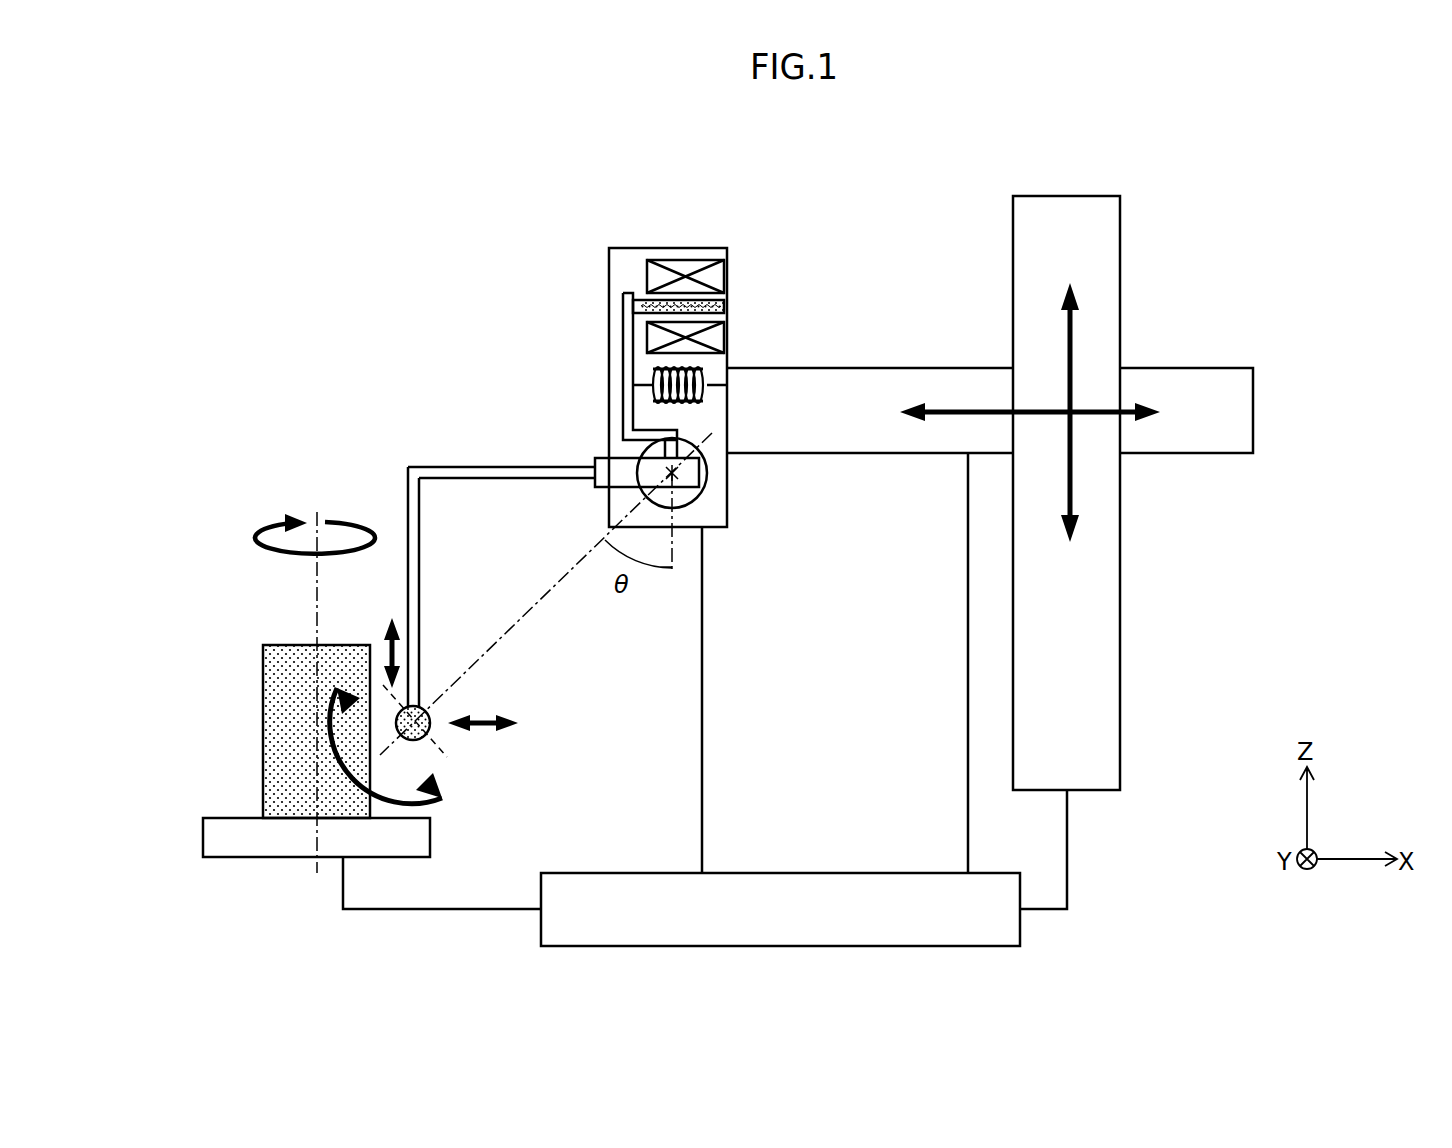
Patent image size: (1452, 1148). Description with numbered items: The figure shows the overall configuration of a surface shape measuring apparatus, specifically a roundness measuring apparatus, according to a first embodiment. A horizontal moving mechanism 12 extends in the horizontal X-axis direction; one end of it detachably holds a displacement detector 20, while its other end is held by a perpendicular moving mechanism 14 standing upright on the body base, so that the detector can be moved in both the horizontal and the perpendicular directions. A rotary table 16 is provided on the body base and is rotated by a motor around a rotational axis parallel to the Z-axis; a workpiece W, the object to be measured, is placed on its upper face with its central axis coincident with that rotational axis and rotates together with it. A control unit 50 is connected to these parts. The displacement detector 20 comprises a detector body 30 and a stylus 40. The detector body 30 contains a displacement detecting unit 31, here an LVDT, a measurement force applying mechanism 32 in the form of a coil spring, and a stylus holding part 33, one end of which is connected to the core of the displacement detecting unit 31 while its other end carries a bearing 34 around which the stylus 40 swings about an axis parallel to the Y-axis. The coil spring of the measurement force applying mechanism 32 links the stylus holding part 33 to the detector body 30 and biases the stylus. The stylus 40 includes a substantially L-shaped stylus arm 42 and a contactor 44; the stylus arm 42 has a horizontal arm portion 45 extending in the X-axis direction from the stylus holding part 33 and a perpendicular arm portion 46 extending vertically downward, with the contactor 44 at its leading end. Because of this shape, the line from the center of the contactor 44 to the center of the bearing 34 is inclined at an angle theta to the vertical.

The horizontal moving mechanism 12 is at (1187, 375).
The perpendicular moving mechanism 14 is at (1068, 200).
The rotary table 16 is at (203, 838).
The displacement detector 20 is at (653, 382).
The detector body 30 is at (645, 272).
The displacement detecting unit 31 is at (626, 277).
The measurement force applying mechanism 32 is at (652, 378).
The stylus holding part 33 is at (623, 412).
The bearing 34 is at (711, 509).
The stylus 40 is at (525, 579).
The stylus arm 42 is at (460, 476).
The contactor 44 is at (426, 706).
The horizontal arm portion 45 is at (435, 469).
The perpendicular arm portion 46 is at (408, 497).
The control unit 50 is at (939, 880).
The workpiece W is at (263, 731).